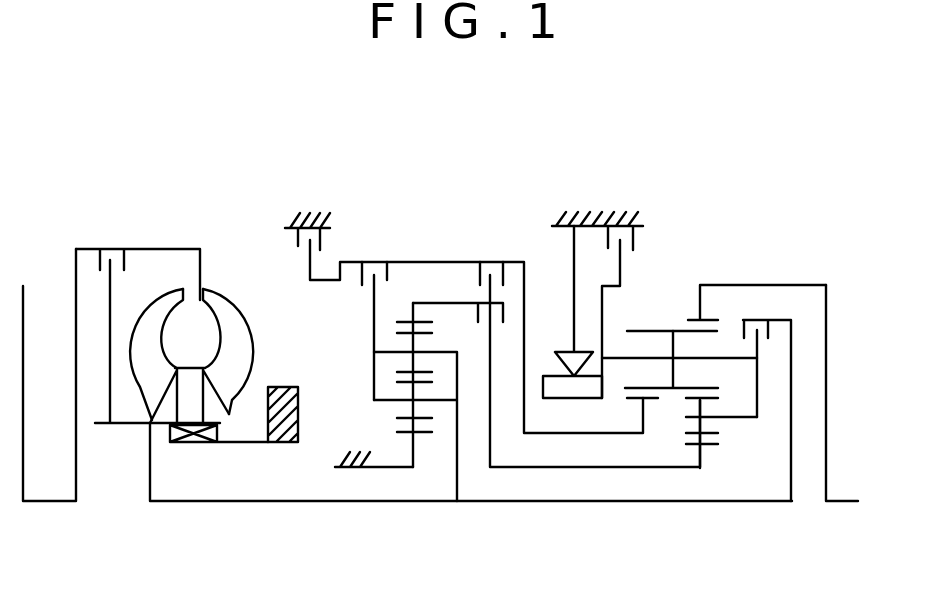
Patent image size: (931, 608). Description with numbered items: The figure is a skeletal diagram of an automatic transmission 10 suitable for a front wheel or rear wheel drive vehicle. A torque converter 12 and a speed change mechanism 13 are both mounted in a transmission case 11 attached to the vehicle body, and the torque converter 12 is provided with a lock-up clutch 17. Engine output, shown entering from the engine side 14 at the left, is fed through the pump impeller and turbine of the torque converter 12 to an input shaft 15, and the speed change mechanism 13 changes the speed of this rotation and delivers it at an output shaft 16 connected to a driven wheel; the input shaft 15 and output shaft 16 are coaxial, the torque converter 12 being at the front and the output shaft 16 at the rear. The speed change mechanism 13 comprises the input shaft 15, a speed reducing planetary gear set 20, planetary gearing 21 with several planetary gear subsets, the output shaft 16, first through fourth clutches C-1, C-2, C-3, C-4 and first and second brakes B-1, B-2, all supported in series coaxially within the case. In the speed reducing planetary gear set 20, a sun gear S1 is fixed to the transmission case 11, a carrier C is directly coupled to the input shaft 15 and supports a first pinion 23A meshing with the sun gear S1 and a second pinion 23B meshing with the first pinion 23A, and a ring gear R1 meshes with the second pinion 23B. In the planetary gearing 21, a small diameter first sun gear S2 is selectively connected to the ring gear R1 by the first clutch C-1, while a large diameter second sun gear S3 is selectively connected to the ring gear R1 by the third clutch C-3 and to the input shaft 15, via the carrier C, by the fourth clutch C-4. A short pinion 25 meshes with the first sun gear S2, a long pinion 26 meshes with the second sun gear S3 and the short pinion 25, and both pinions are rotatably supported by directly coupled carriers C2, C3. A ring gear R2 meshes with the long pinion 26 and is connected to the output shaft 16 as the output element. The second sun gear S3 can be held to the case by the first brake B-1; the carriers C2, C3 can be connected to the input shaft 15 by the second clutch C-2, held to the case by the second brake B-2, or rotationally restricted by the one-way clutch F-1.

The automatic transmission 10 is at (422, 188).
The transmission case 11 is at (581, 224).
The torque converter 12 is at (218, 266).
The speed change mechanism 13 is at (683, 213).
The engine output shaft 14 is at (48, 503).
The input shaft 15 is at (310, 503).
The output shaft 16 is at (843, 503).
The lock-up clutch 17 is at (108, 238).
The speed reducing planetary gear set 20 is at (352, 338).
The planetary gearing 21 is at (680, 288).
The first pinion 23A is at (412, 410).
The second pinion 23B is at (412, 365).
The short pinion 25 is at (705, 423).
The long pinion 26 is at (649, 330).
The carrier C is at (374, 383).
The ring gear R1 is at (404, 320).
The sun gear S1 is at (422, 437).
The ring gear R2 is at (710, 316).
The first sun gear S2 is at (708, 447).
The second sun gear S3 is at (656, 398).
The carrier C2 is at (757, 400).
The carrier C3 is at (757, 370).
The first clutch C-1 is at (458, 295).
The second clutch C-2 is at (768, 394).
The third clutch C-3 is at (582, 348).
The fourth clutch C-4 is at (361, 315).
The first brake B-1 is at (463, 304).
The second brake B-2 is at (598, 287).
The one-way clutch F-1 is at (572, 329).